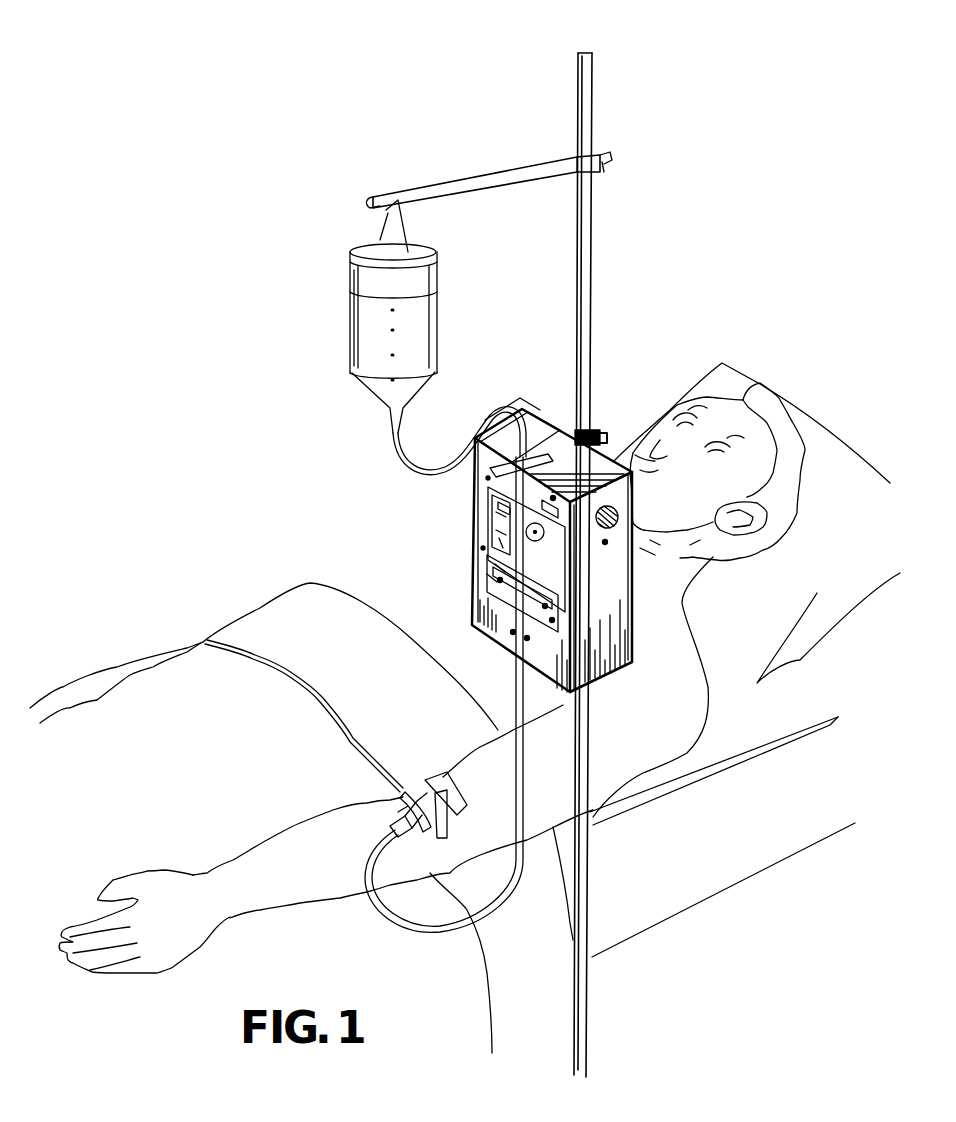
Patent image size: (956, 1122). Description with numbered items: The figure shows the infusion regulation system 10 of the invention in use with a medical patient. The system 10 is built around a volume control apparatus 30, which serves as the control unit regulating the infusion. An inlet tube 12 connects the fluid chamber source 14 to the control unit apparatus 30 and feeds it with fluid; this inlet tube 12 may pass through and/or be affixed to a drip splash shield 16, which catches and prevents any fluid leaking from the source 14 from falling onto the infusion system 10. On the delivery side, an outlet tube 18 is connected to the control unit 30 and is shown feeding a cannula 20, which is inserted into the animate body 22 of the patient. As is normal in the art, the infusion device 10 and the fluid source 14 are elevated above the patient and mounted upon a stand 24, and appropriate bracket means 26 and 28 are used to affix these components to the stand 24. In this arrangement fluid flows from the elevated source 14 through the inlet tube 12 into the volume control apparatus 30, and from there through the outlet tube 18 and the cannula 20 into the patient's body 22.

The infusion regulation system 10 is at (543, 420).
The inlet tube 12 is at (413, 470).
The fluid chamber source 14 is at (368, 362).
The drip splash shield 16 is at (476, 511).
The outlet tube 18 is at (523, 812).
The cannula 20 is at (412, 792).
The animate body 22 is at (480, 750).
The stand 24 is at (600, 292).
The bracket means 26 is at (598, 437).
The bracket means 28 is at (487, 185).
The volume control apparatus 30 is at (487, 583).